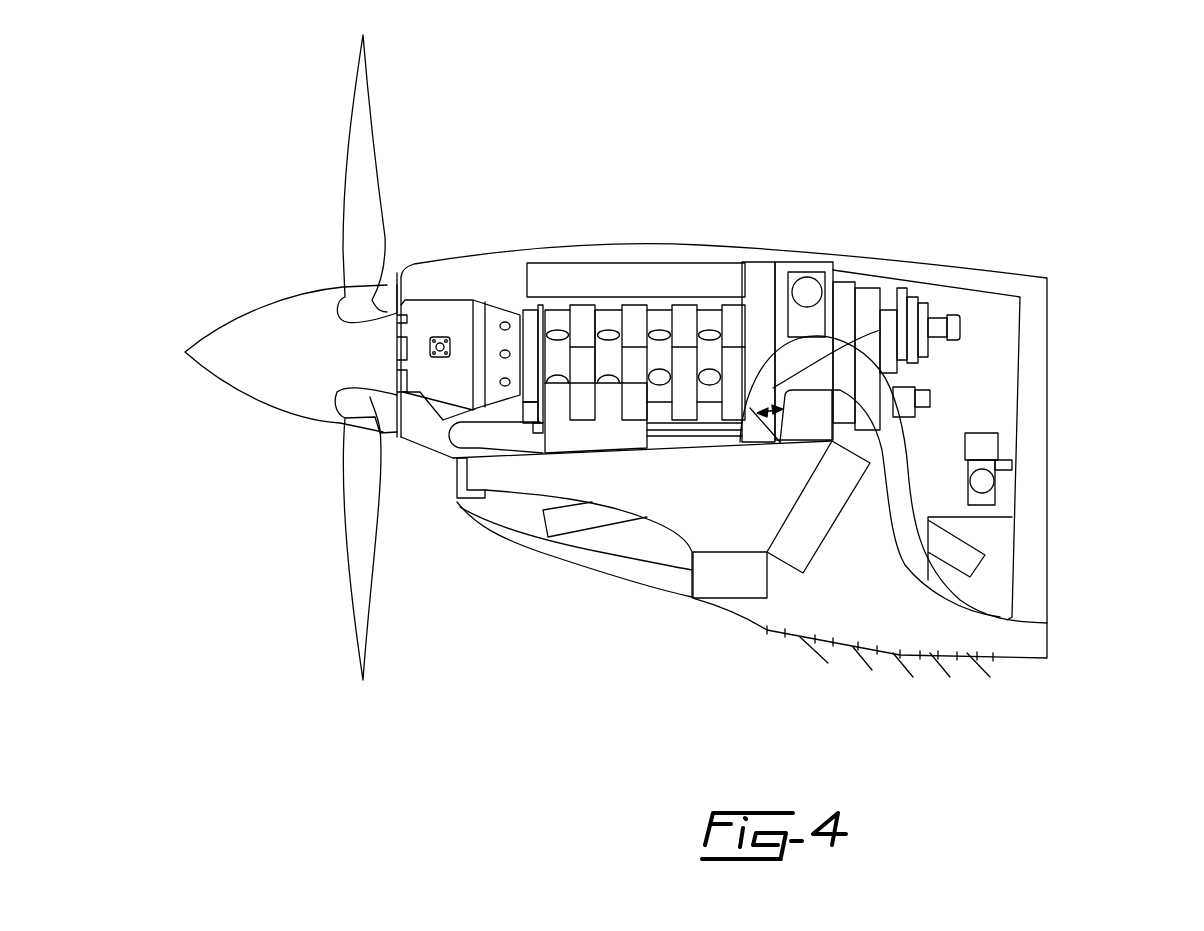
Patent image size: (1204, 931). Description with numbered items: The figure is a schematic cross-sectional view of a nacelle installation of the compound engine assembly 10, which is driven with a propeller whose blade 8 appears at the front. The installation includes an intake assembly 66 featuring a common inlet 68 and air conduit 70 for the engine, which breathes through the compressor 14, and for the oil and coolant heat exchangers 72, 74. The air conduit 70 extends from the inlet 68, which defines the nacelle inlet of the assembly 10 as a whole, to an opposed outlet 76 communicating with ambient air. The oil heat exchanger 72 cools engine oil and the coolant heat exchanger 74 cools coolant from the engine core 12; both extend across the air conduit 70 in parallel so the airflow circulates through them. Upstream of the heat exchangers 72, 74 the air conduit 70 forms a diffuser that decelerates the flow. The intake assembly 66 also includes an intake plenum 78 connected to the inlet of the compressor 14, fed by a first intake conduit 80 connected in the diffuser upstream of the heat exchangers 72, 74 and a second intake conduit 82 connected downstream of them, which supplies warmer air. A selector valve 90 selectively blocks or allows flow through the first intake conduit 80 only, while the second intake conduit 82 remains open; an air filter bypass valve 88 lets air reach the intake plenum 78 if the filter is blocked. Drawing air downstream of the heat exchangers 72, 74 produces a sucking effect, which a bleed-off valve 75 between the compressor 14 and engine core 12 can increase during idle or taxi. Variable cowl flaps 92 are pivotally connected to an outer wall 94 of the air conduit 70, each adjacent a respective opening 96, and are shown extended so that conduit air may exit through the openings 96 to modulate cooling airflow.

The propeller blade 8 is at (363, 163).
The compound engine assembly 10 is at (644, 200).
The engine core 12 is at (590, 278).
The compressor 14 is at (757, 262).
The intake assembly 66 is at (682, 608).
The inlet 68 is at (457, 477).
The air conduit 70 is at (562, 475).
The oil heat exchanger 72 is at (758, 582).
The coolant heat exchanger 74 is at (818, 527).
The bleed-off valve 75 is at (743, 330).
The outlet 76 is at (1047, 640).
The intake plenum 78 is at (798, 268).
The first intake conduit 80 is at (880, 330).
The second intake conduit 82 is at (902, 448).
The air filter bypass valve 88 is at (818, 283).
The selector valve 90 is at (752, 432).
The variable cowl flaps 92 is at (765, 646).
The outer wall 94 is at (1010, 657).
The opening 96 is at (770, 638).